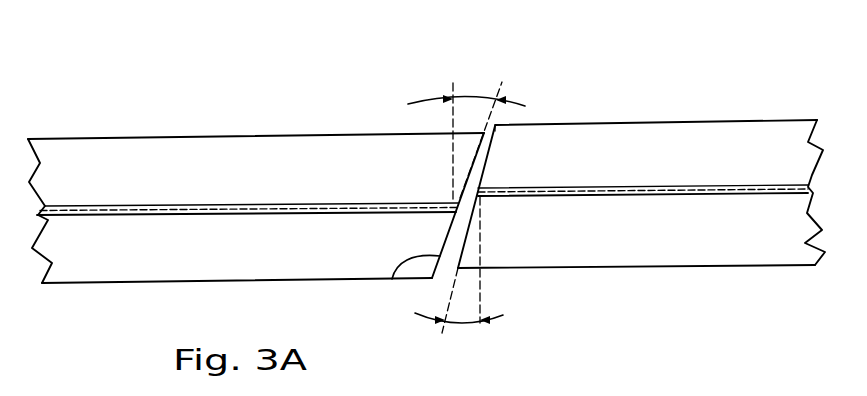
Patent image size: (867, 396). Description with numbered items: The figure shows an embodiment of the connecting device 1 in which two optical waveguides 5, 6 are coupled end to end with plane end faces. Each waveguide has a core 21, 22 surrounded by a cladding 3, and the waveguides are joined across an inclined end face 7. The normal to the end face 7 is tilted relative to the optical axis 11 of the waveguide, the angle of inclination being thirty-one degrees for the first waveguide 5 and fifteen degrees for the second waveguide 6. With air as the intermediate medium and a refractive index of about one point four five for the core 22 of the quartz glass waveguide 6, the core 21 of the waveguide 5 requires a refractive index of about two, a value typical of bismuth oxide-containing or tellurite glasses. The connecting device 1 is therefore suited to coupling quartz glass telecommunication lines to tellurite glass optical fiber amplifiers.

The connecting device 1 is at (548, 32).
The waveguide cladding 3 is at (633, 228).
The first waveguide 5 is at (142, 136).
The second waveguide 6 is at (688, 122).
The end face 7 is at (390, 271).
The optical axis 11 is at (285, 207).
The waveguide core 21 is at (78, 216).
The waveguide core 22 is at (740, 196).